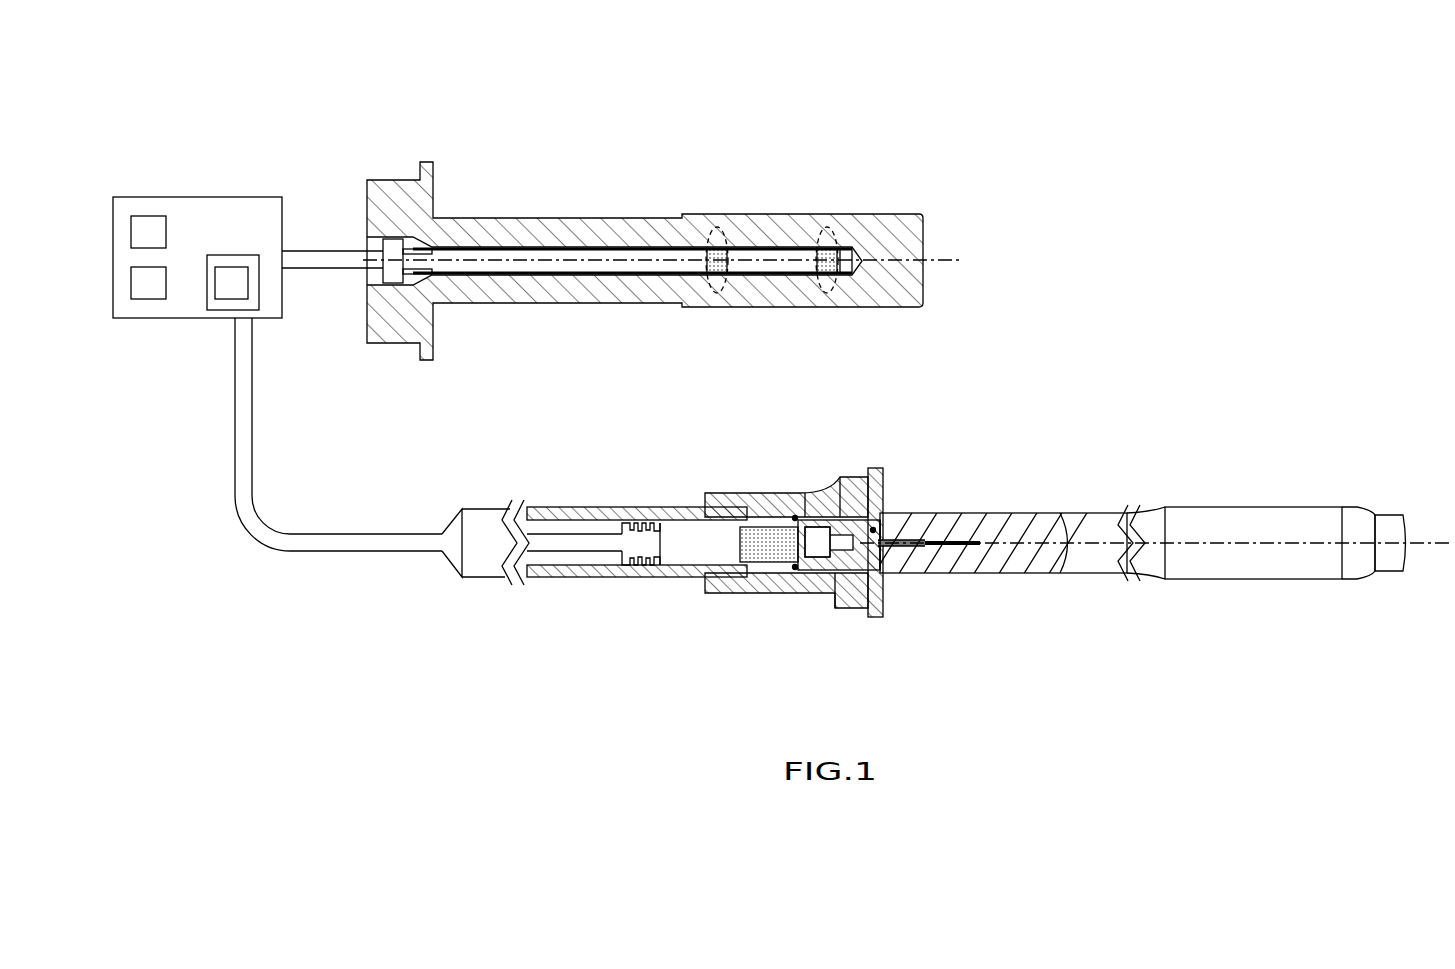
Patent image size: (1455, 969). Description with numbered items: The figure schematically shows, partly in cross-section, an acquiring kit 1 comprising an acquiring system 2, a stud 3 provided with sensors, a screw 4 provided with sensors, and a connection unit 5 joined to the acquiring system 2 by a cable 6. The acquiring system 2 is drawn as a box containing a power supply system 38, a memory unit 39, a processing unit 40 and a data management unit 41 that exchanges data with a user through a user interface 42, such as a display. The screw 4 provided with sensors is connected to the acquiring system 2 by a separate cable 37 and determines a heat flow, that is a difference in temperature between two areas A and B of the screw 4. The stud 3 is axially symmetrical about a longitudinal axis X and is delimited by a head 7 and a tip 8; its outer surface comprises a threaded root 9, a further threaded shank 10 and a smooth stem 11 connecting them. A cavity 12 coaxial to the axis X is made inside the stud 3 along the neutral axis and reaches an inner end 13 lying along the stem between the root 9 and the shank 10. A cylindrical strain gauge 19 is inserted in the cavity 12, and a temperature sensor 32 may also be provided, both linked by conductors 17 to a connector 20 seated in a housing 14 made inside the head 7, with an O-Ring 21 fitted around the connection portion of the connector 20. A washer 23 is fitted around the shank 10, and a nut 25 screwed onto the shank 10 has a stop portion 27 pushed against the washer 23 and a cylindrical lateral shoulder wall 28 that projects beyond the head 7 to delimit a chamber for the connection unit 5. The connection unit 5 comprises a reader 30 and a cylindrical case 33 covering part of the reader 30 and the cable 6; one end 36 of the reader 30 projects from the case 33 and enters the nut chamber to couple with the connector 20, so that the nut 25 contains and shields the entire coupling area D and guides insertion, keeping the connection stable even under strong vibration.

The acquiring kit 1 is at (913, 120).
The acquiring system 2 is at (175, 183).
The stud provided with sensors 3 is at (1250, 462).
The screw provided with sensors 4 is at (903, 200).
The connection unit 5 is at (672, 498).
The cable 6 is at (283, 537).
The head 7 is at (813, 500).
The tip 8 is at (1390, 515).
The root 9 is at (1262, 506).
The shank 10 is at (843, 500).
The stem 11 is at (1075, 510).
The cavity 12 is at (930, 550).
The inner end 13 is at (985, 540).
The housing 14 is at (882, 560).
The conductors 17 is at (915, 548).
The strain gauge 19 is at (950, 540).
The connector 20 is at (835, 590).
The O-Ring 21 is at (765, 585).
The washer 23 is at (883, 482).
The nut 25 is at (753, 490).
The stop portion 27 is at (850, 595).
The cylindrical lateral shoulder wall 28 is at (735, 585).
The reader 30 is at (655, 560).
The temperature sensor 32 is at (878, 525).
The case 33 is at (488, 528).
The end of the socket 36 is at (442, 537).
The cable 37 is at (320, 259).
The power supply system 38 is at (212, 197).
The memory unit 39 is at (136, 232).
The processing unit 40 is at (136, 283).
The data management unit 41 is at (259, 282).
The user interface 42 is at (222, 288).
The area of the screw A is at (710, 227).
The area of the screw B is at (830, 227).
The coupling area D is at (800, 580).
The longitudinal axis X is at (1430, 543).